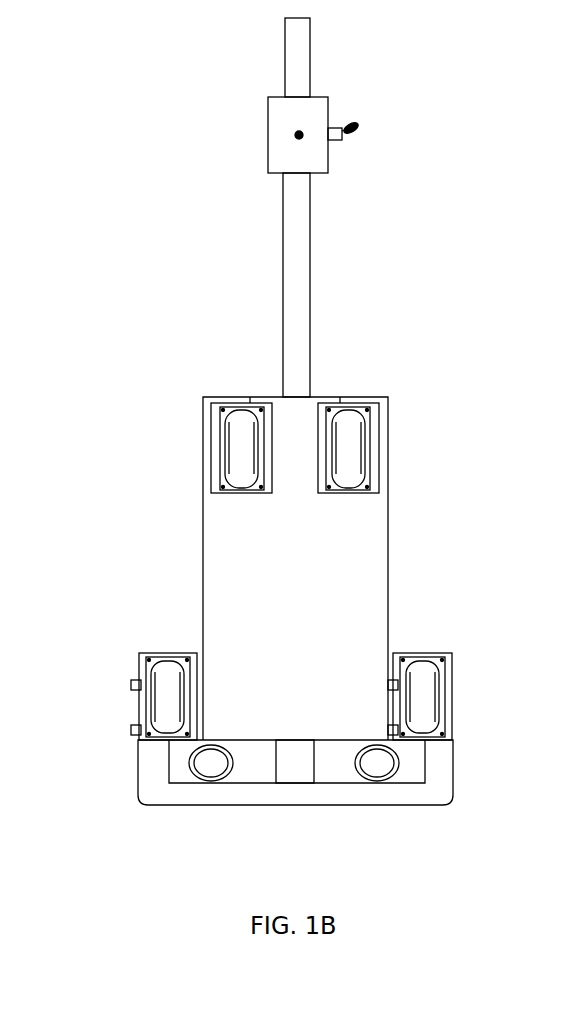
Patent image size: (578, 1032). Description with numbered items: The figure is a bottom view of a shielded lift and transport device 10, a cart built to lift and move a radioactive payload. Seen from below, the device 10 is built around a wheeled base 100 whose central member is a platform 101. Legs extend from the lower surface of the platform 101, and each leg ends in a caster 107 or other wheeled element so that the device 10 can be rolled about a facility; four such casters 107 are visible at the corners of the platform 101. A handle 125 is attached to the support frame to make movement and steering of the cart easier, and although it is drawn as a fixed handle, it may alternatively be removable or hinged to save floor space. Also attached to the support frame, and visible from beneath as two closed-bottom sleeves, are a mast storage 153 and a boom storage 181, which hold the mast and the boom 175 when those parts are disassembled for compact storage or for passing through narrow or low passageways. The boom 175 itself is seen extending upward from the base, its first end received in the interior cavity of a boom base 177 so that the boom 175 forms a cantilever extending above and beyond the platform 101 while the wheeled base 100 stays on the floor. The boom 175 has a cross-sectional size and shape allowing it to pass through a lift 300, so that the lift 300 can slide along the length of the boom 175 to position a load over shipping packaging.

The shielded lift and transport device 10 is at (490, 84).
The wheeled base 100 is at (433, 583).
The platform 101 is at (236, 580).
The caster 107 is at (355, 430).
The handle 125 is at (253, 791).
The mast storage 153 is at (380, 763).
The boom 175 is at (292, 268).
The boom base 177 is at (312, 785).
The boom storage 181 is at (205, 763).
The lift 300 is at (283, 118).